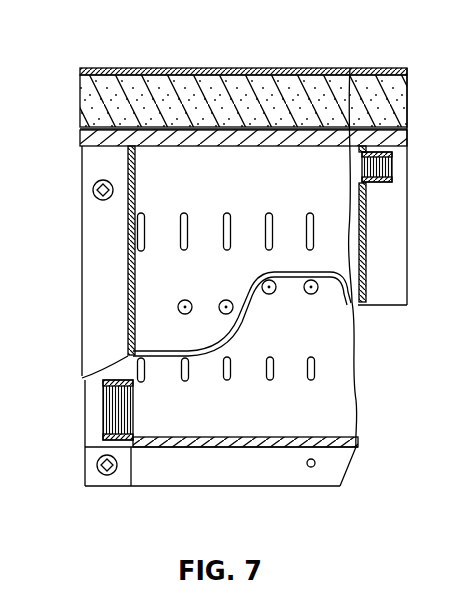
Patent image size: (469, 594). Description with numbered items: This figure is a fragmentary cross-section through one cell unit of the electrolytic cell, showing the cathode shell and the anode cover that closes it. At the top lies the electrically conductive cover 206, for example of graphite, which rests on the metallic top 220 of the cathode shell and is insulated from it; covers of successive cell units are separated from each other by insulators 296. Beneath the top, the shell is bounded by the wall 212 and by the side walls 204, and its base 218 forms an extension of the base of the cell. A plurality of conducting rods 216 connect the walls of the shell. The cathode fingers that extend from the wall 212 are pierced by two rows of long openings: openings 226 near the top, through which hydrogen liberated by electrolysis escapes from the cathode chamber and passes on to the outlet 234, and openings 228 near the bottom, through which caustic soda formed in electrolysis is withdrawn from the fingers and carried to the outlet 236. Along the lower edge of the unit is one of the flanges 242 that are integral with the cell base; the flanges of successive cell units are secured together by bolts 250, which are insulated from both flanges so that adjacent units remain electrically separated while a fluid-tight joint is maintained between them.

The insulator 296 is at (84, 68).
The electrically conductive cover 206 is at (408, 73).
The metallic top 220 is at (293, 147).
The side wall 204 is at (129, 272).
The flange 242 is at (245, 508).
The bolt 250 is at (94, 196).
The opening 226 is at (222, 221).
The outlet 234 is at (380, 184).
The conducting rod 216 is at (220, 303).
The wall 212 is at (256, 275).
The opening 228 is at (180, 381).
The base 218 is at (258, 437).
The outlet 236 is at (102, 446).